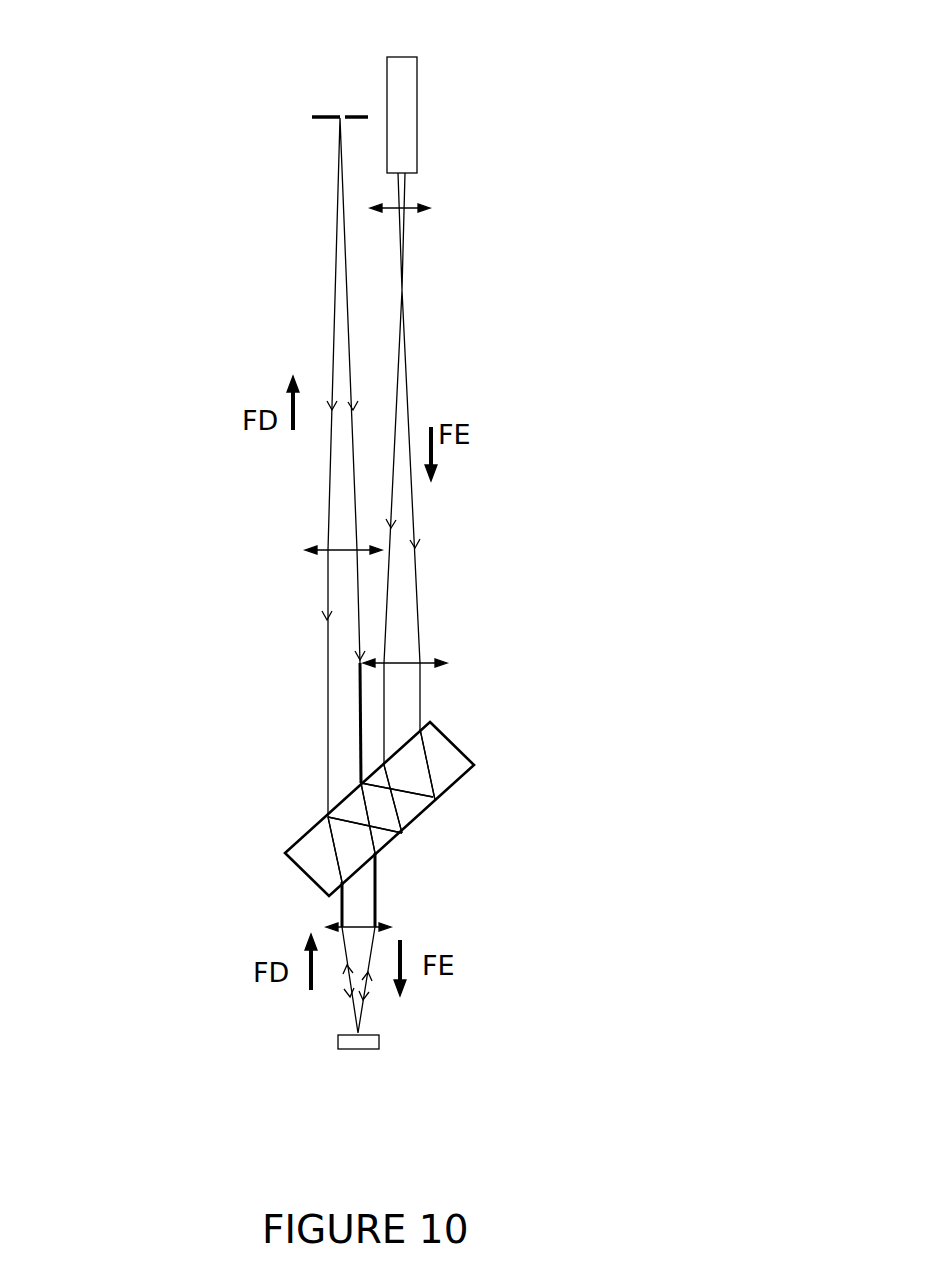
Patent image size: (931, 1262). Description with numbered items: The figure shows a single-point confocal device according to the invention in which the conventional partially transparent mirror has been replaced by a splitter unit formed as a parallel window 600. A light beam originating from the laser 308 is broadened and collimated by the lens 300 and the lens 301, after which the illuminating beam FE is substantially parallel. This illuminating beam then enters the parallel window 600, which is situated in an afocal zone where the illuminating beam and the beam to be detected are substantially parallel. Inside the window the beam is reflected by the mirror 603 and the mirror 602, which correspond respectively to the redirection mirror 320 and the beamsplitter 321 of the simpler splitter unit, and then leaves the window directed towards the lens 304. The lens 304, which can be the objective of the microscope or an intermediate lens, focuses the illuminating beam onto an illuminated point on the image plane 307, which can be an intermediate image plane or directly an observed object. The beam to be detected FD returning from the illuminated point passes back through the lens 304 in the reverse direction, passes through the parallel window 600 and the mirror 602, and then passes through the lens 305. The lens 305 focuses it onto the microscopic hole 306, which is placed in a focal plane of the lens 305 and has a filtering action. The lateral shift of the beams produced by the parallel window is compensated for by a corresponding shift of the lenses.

The laser 308 is at (423, 45).
The lens 300 is at (430, 185).
The microscopic hole 306 is at (323, 108).
The lens 305 is at (303, 536).
The lens 301 is at (437, 642).
The parallel window 600 is at (343, 802).
The beamsplitter 321 is at (397, 790).
The mirror 602 is at (327, 801).
The redirection mirror 320 is at (365, 825).
The mirror 603 is at (427, 828).
The lens 304 is at (314, 919).
The image plane 307 is at (335, 1060).